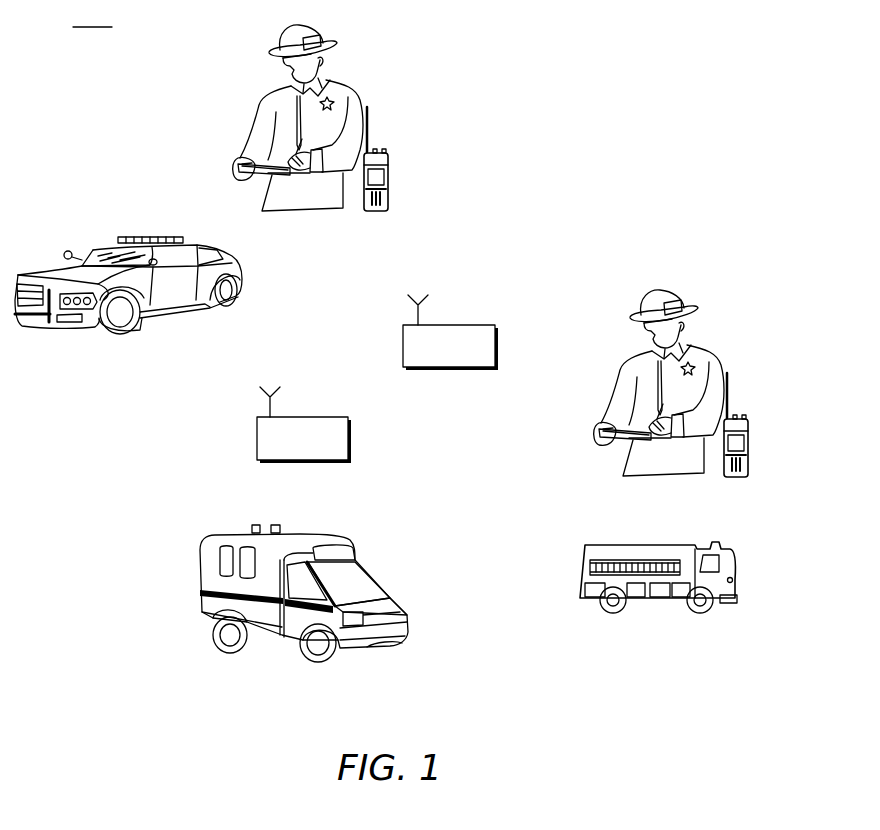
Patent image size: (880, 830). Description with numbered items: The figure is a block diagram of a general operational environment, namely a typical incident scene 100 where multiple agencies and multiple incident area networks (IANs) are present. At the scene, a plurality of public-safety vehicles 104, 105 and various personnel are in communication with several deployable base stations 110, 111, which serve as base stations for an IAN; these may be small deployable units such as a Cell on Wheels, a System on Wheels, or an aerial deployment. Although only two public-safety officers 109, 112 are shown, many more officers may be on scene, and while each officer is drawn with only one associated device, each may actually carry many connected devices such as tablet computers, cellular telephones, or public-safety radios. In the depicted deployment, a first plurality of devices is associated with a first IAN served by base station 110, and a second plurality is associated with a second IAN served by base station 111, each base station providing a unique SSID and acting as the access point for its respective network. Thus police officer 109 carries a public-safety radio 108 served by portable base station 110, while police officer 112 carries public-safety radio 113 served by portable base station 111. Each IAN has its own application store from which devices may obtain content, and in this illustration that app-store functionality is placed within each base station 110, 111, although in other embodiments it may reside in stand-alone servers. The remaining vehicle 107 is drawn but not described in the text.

The incident scene 100 is at (92, 16).
The public-safety vehicle 104 is at (241, 259).
The public-safety vehicle 105 is at (734, 552).
The ambulance 107 is at (392, 592).
The public-safety radio 108 is at (395, 178).
The public-safety officer 109 is at (320, 42).
The deployable base station 110 is at (305, 417).
The deployable base station 111 is at (450, 325).
The public-safety officer 112 is at (682, 305).
The public-safety radio 113 is at (756, 446).